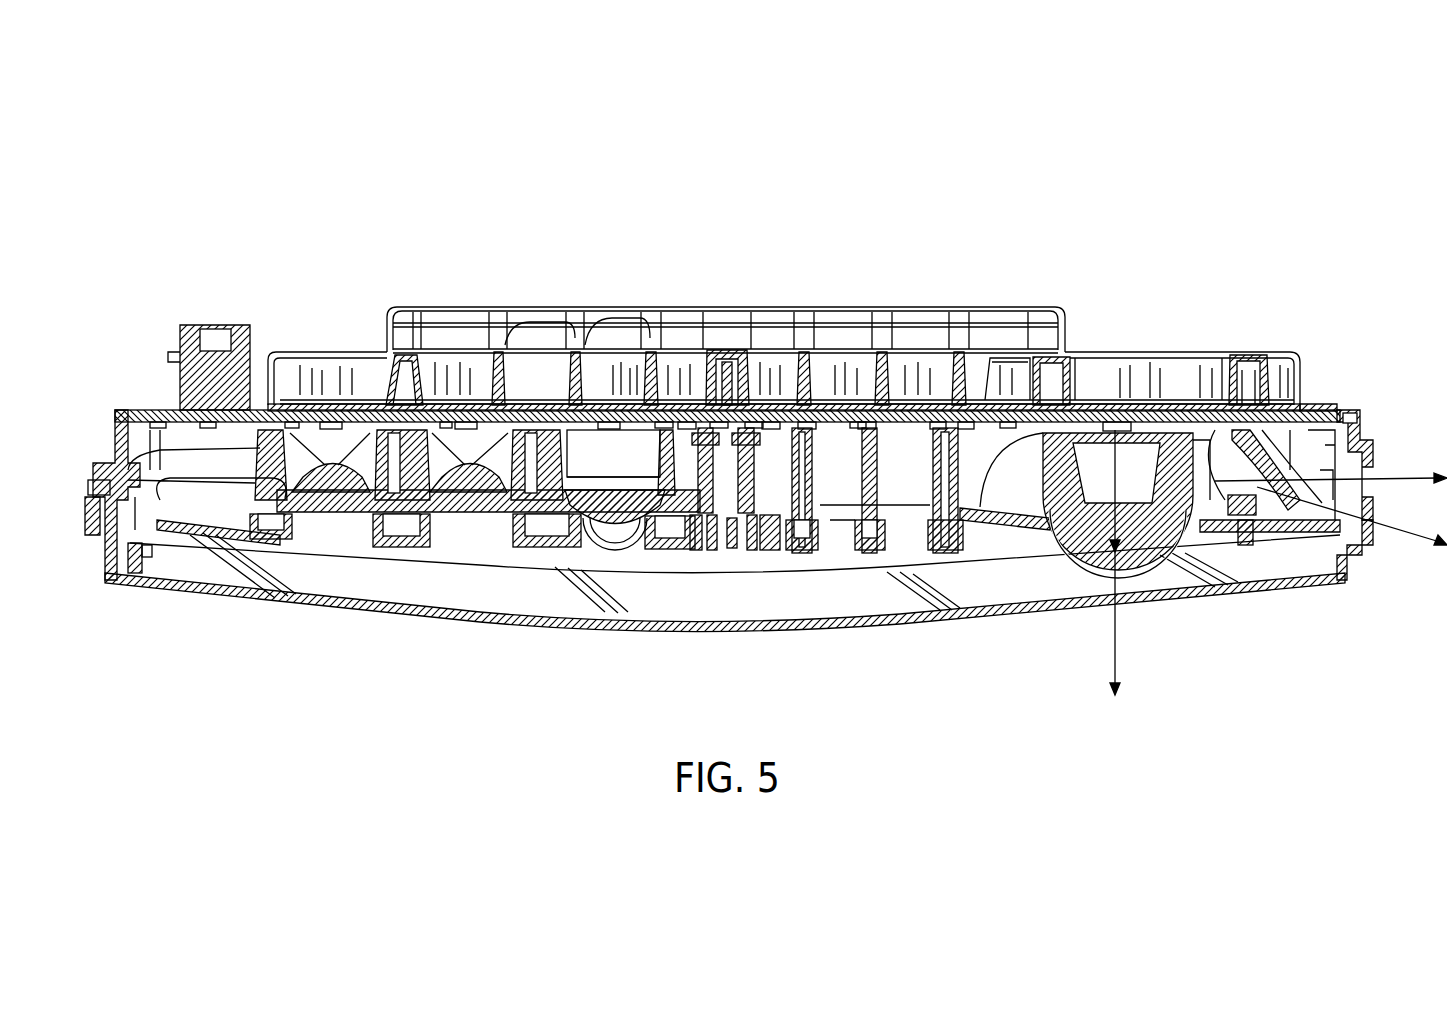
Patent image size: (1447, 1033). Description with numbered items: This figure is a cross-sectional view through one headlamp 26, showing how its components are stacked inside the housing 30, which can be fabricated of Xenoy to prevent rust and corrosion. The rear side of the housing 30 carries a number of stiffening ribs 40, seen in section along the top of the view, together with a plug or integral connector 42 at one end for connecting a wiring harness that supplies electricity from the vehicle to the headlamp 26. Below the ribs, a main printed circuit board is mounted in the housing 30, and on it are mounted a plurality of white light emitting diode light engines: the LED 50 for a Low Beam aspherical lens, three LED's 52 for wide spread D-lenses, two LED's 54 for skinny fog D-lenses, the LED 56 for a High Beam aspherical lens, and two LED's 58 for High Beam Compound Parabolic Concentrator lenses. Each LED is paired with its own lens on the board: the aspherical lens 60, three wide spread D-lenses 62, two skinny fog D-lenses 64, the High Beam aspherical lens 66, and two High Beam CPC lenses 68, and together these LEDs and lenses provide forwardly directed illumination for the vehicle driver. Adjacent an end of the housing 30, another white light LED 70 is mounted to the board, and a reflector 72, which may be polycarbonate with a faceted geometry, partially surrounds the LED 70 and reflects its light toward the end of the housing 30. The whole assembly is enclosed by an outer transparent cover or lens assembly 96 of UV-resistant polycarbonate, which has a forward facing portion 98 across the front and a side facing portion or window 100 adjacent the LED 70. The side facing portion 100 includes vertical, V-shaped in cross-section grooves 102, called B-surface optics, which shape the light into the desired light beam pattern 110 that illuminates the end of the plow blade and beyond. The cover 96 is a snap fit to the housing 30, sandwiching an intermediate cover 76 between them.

The headlamp 26 is at (274, 146).
The housing 30 is at (1056, 296).
The stiffening ribs 40 is at (412, 310).
The plug or integral connector 42 is at (220, 325).
The LED 50 is at (1124, 421).
The LED's 52 is at (807, 421).
The LED's 54 is at (687, 421).
The LED 56 is at (608, 421).
The LED's 58 is at (466, 421).
The lens 60 is at (1135, 550).
The lenses 62 is at (810, 550).
The lenses 64 is at (752, 525).
The lens 66 is at (614, 525).
The lenses 68 is at (333, 520).
The LED 70 is at (1305, 432).
The reflector 72 is at (1240, 540).
The intermediate cover 76 is at (523, 558).
The outer transparent cover or lens assembly 96 is at (221, 603).
The forward facing portion 98 is at (1025, 606).
The side facing portion or window 100 is at (1375, 503).
The grooves 102 is at (1366, 520).
The light beam pattern 110 is at (1396, 478).